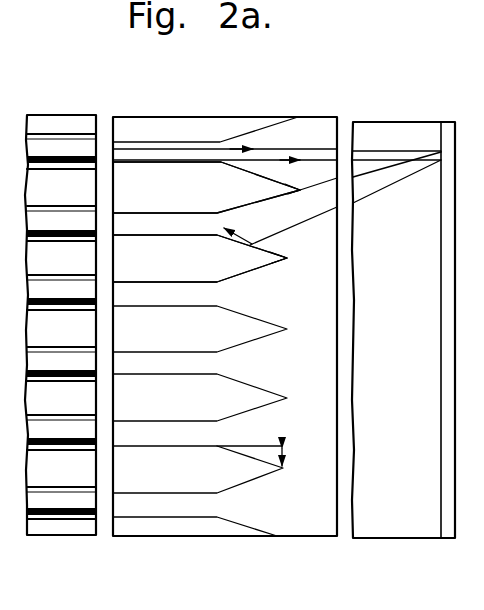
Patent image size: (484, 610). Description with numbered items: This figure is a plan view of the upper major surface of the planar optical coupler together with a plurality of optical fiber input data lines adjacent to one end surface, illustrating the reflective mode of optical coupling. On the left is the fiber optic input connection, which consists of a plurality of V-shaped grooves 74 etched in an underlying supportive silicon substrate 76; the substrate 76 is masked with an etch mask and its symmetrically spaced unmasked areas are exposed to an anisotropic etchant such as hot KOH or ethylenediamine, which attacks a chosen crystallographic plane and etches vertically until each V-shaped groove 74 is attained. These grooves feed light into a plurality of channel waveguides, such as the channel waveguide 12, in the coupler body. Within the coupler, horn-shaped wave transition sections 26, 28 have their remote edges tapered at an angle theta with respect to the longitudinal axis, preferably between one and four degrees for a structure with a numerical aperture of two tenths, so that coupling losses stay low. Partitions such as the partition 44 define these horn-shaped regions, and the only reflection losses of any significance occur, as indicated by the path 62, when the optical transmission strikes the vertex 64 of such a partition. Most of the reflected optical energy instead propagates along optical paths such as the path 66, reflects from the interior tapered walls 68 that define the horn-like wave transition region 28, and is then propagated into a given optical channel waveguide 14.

The channel waveguide 12 is at (129, 150).
The optical channel waveguide 14 is at (147, 226).
The horn-shaped wave transition section 26 is at (300, 144).
The horn-like wave transition region 28 is at (307, 250).
The partition 44 is at (149, 195).
The optical path 62 is at (280, 226).
The vertex 64 is at (287, 190).
The optical path 66 is at (398, 186).
The interior tapered walls 68 is at (278, 252).
The V-shaped grooves 74 is at (68, 132).
The silicon substrate 76 is at (73, 528).